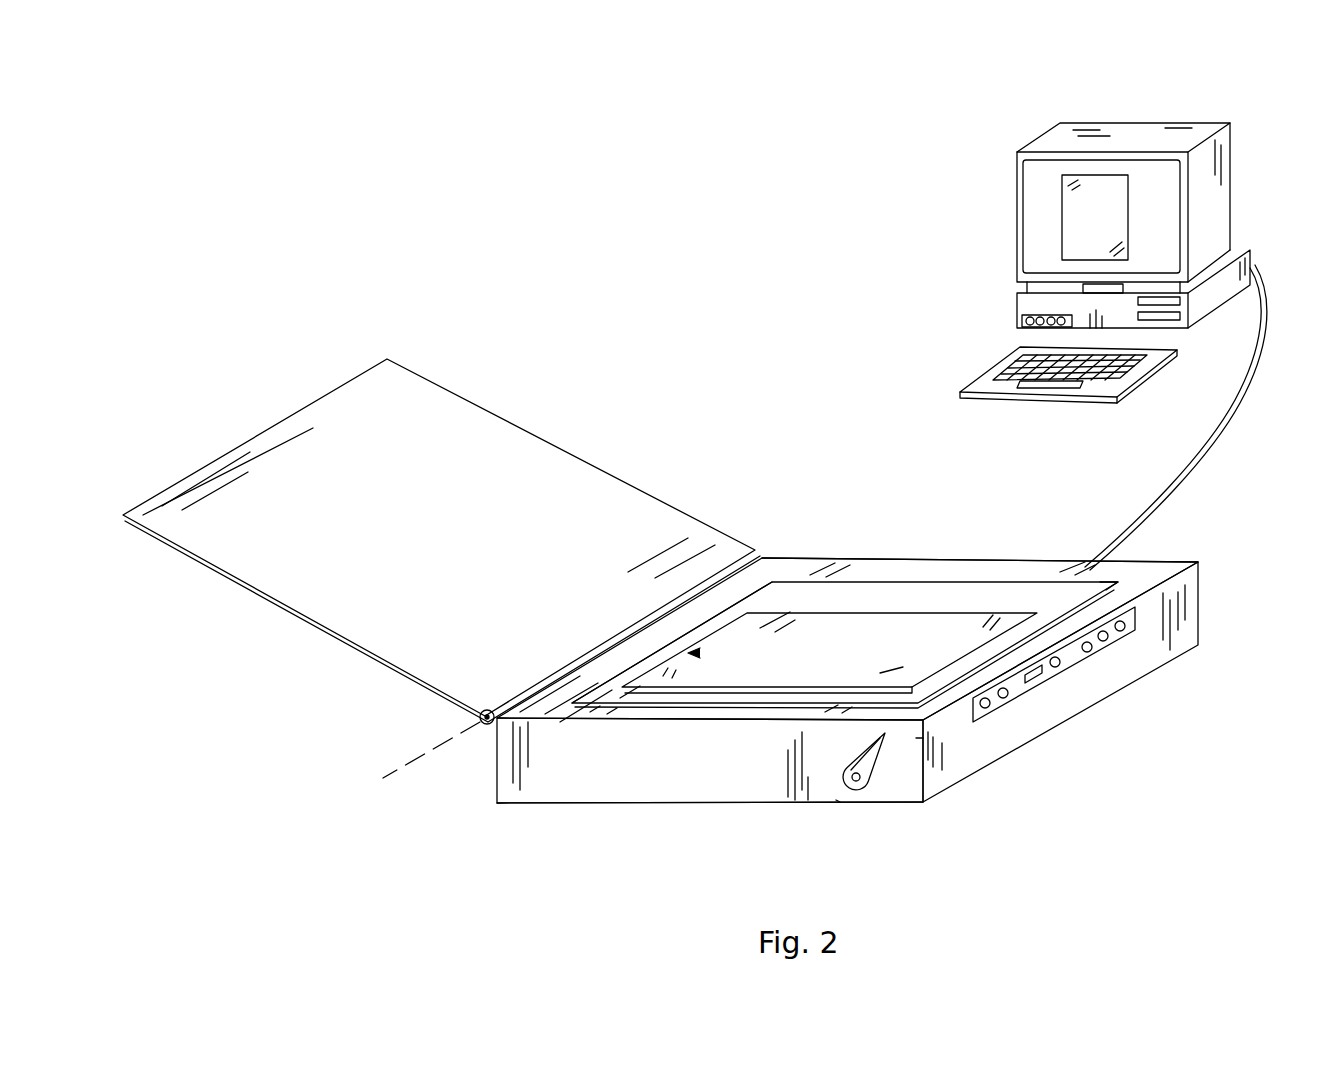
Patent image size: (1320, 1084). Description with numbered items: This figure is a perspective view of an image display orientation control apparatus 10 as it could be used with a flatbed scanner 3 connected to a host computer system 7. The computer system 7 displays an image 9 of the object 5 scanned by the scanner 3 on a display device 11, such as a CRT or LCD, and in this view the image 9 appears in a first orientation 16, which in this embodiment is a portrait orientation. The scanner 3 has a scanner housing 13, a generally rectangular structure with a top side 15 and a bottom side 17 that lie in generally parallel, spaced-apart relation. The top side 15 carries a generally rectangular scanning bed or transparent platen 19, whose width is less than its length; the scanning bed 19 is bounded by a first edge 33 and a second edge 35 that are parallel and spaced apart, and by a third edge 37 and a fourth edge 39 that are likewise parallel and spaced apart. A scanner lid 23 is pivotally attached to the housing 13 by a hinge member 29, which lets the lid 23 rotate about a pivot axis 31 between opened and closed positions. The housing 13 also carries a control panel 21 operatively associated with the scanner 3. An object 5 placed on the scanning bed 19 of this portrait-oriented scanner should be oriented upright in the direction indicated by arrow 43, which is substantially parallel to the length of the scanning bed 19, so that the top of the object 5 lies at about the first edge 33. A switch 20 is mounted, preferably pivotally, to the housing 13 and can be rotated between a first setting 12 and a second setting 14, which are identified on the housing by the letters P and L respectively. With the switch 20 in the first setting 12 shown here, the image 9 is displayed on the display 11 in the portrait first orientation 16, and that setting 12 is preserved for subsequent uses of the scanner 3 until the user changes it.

The image display orientation control apparatus 10 is at (252, 210).
The host computer system 7 is at (1013, 305).
The display device 11 is at (1018, 186).
The image 9 is at (1100, 230).
The first orientation 16 is at (1112, 172).
The flatbed scanner 3 is at (640, 808).
The scanner lid 23 is at (408, 518).
The hinge member 29 is at (478, 716).
The pivot axis 31 is at (408, 762).
The scanner housing 13 is at (565, 812).
The bottom side 17 is at (776, 808).
The first setting 12 is at (928, 736).
The top side 15 is at (790, 557).
The scanning bed 19 is at (905, 600).
The third edge 37 is at (732, 705).
The first edge 33 is at (665, 645).
The fourth edge 39 is at (1013, 582).
The second edge 35 is at (1112, 590).
The object 5 is at (863, 666).
The arrow 43 is at (694, 653).
The control panel 21 is at (1043, 683).
The switch 20 is at (863, 790).
The letter "L" L is at (853, 746).
The second setting 14 is at (833, 755).
The letter "P" P is at (910, 739).